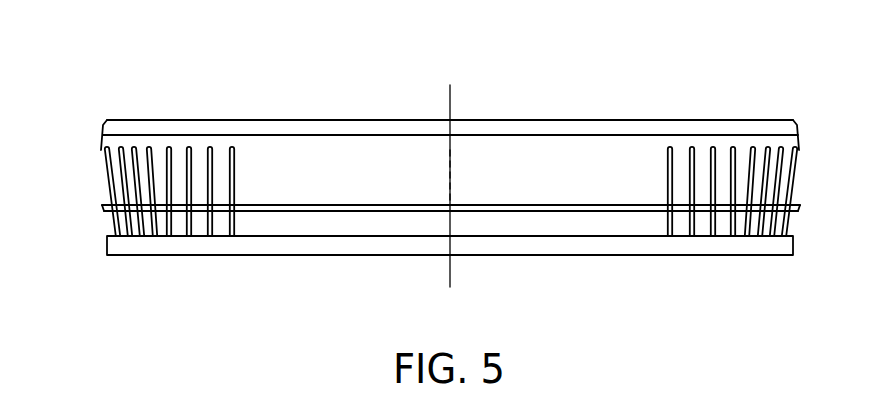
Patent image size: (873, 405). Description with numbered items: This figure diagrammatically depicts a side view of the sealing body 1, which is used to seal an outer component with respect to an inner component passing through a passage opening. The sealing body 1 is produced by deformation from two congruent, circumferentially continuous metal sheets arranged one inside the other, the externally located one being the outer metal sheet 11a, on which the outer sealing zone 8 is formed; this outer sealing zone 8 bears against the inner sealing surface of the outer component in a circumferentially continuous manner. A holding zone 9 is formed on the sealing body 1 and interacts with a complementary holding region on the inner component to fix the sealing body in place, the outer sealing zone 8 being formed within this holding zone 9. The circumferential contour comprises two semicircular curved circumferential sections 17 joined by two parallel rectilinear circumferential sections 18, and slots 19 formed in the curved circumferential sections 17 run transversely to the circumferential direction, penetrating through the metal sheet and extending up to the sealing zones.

The sealing body 1 is at (562, 121).
The outer sealing zone 8 is at (397, 210).
The holding zone 9 is at (86, 205).
The outer metal sheet 11a is at (517, 173).
The curved circumferential section 17 is at (104, 157).
The rectilinear circumferential section 18 is at (570, 225).
The slot 19 is at (194, 165).